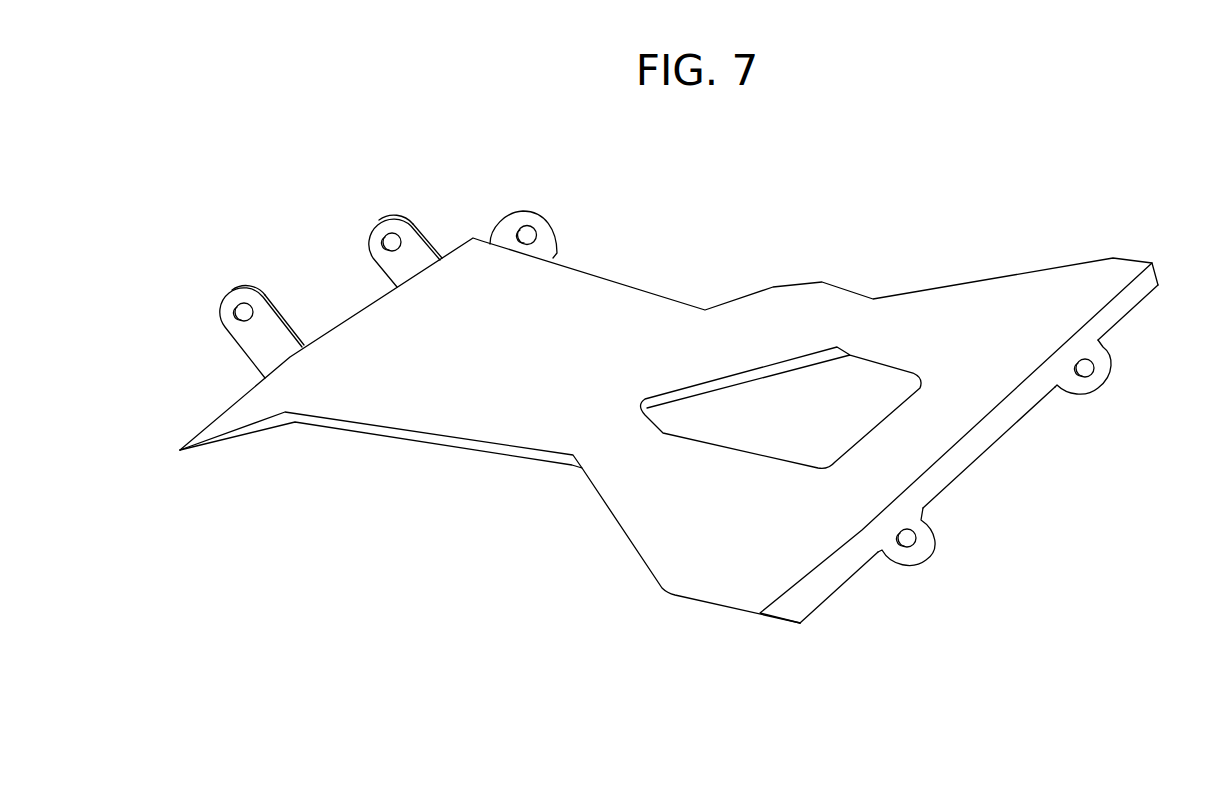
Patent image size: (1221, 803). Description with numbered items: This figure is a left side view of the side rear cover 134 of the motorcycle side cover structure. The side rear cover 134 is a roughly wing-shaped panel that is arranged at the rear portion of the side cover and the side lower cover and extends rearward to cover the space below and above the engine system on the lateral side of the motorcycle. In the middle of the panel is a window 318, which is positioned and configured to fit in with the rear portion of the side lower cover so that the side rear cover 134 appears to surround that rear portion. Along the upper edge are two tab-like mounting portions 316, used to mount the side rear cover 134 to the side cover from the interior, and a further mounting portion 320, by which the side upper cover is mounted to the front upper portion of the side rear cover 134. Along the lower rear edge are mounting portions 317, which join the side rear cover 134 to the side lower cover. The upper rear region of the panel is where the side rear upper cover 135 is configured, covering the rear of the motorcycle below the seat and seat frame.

The side rear cover 134 is at (823, 247).
The side rear upper cover 135 is at (302, 163).
The mounting portions 316 is at (384, 240).
The mounting portions 317 is at (916, 540).
The window 318 is at (755, 407).
The mounting portion 320 is at (538, 227).